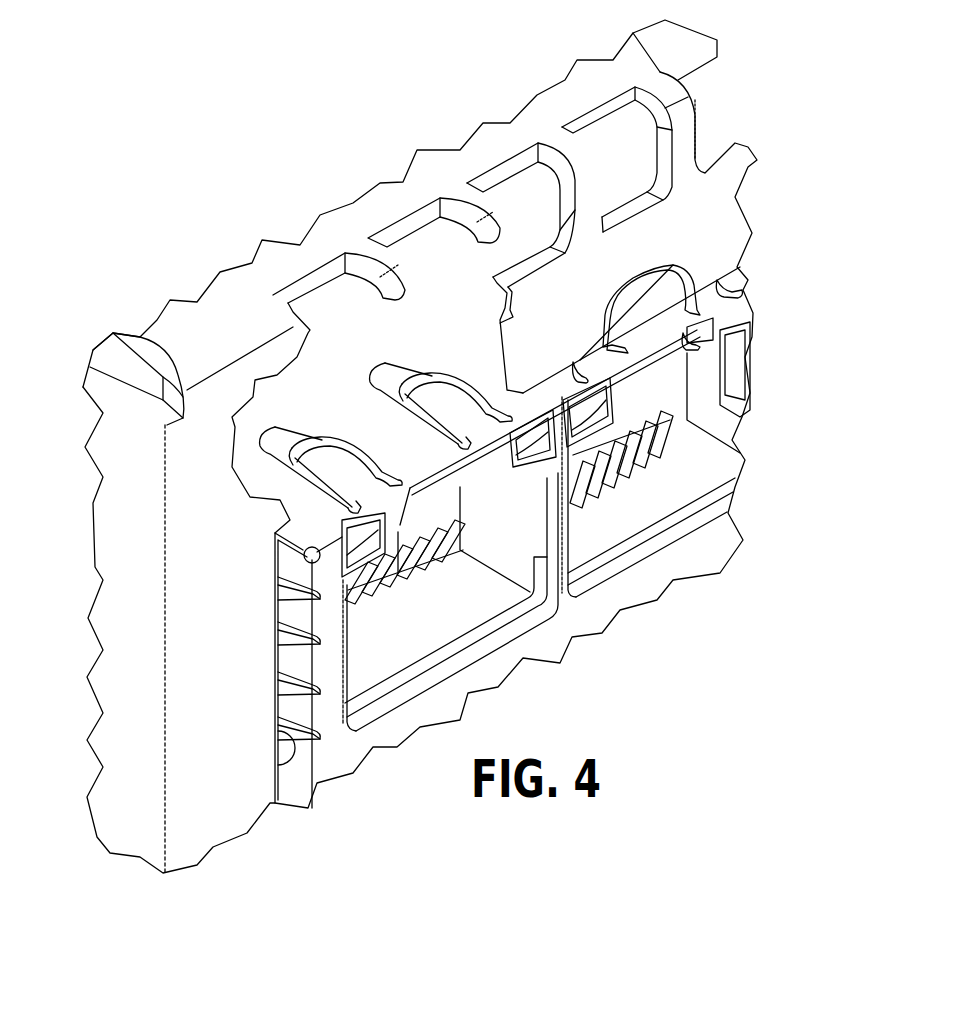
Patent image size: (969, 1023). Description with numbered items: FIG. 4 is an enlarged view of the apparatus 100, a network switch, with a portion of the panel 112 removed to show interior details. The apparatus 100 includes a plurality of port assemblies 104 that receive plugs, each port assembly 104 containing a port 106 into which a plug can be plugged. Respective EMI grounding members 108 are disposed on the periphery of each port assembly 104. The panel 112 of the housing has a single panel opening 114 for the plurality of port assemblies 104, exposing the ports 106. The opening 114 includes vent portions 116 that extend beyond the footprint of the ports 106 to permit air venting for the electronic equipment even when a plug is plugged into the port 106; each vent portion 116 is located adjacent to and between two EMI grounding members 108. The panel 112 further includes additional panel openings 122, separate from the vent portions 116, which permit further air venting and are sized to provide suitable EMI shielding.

The apparatus 100 is at (358, 163).
The port assembly 104 is at (628, 609).
The port 106 is at (720, 467).
The EMI grounding member 108 is at (343, 433).
The panel 112 is at (110, 572).
The opening 114 is at (277, 765).
The vent portion 116 is at (618, 291).
The additional panel opening 122 is at (597, 128).